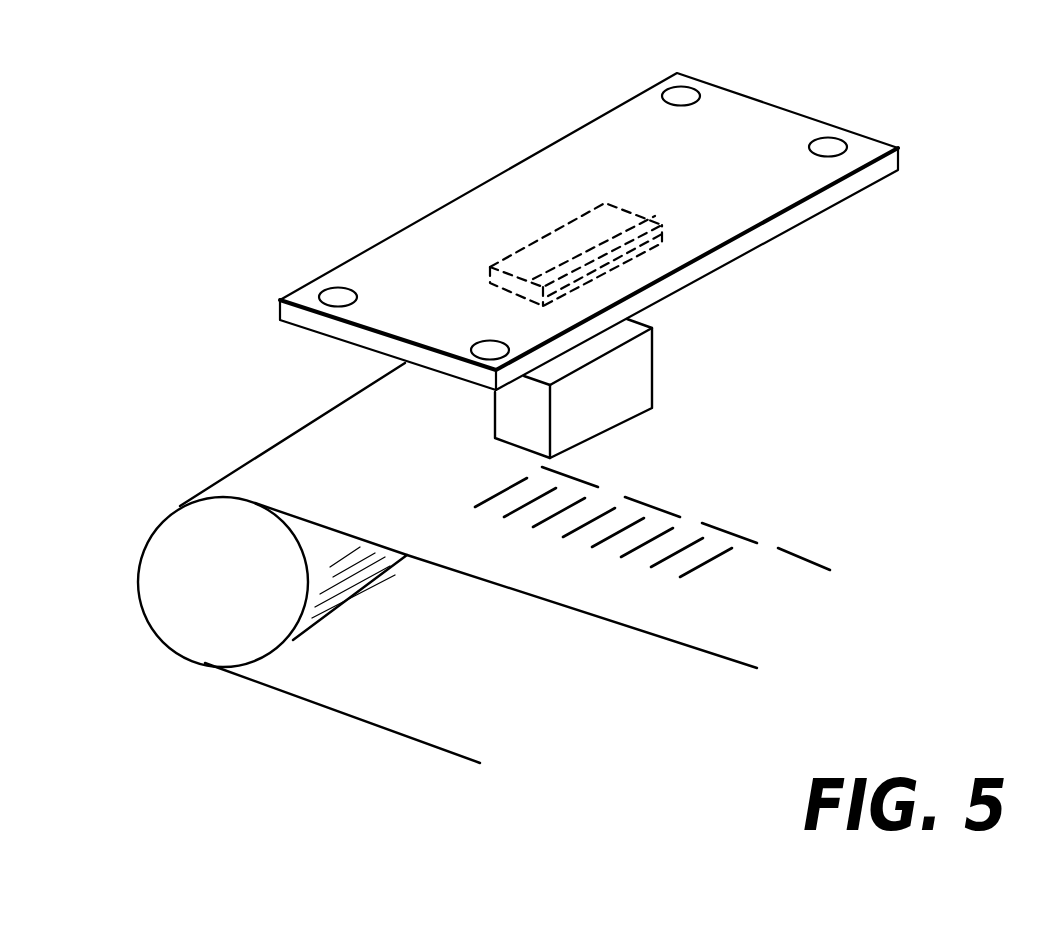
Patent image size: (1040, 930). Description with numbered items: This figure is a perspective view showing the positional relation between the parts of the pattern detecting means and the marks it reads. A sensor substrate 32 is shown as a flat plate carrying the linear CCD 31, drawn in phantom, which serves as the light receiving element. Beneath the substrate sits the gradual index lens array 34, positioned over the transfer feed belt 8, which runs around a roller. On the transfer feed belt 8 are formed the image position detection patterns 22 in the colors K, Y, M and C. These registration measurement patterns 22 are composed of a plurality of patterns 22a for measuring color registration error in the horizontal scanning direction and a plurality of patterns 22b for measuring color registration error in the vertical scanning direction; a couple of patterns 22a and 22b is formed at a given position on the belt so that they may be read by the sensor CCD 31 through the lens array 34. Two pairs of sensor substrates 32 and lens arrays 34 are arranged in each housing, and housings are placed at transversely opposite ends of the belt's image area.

The transfer feed belt 8 is at (565, 582).
The image position detection patterns 22 is at (650, 518).
The patterns for measurement of color registration error in the horizontal scanning 22a is at (493, 497).
The patterns for measurement of color registration error in the vertical scanning di 22b is at (757, 543).
The linear CCD 31 is at (543, 237).
The sensor substrate 32 is at (783, 130).
The gradual index lens array 34 is at (662, 378).